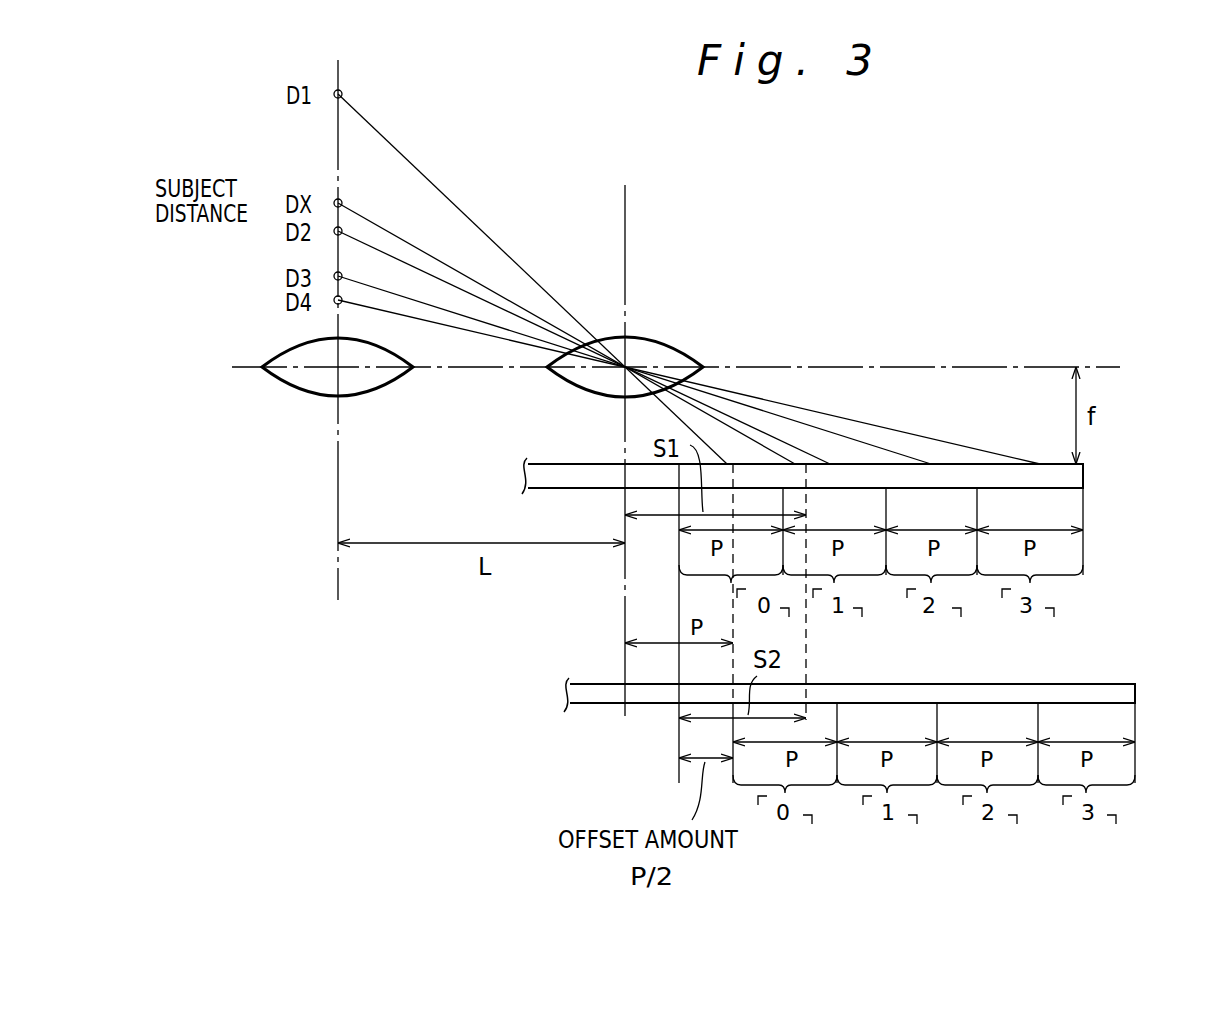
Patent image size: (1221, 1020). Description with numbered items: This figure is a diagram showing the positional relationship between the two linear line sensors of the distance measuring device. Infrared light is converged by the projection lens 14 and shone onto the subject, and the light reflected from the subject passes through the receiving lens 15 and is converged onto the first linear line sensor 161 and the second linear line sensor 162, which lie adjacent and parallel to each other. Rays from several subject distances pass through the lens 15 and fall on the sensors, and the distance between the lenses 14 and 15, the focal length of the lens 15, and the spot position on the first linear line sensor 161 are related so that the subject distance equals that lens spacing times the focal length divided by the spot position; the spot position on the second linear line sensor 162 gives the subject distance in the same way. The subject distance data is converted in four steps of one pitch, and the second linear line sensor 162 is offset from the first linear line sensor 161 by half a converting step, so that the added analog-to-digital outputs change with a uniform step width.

The projection lens 14 is at (310, 387).
The receiving lens 15 is at (670, 350).
The first linear line sensor 161 is at (1075, 475).
The second linear line sensor 162 is at (1073, 692).